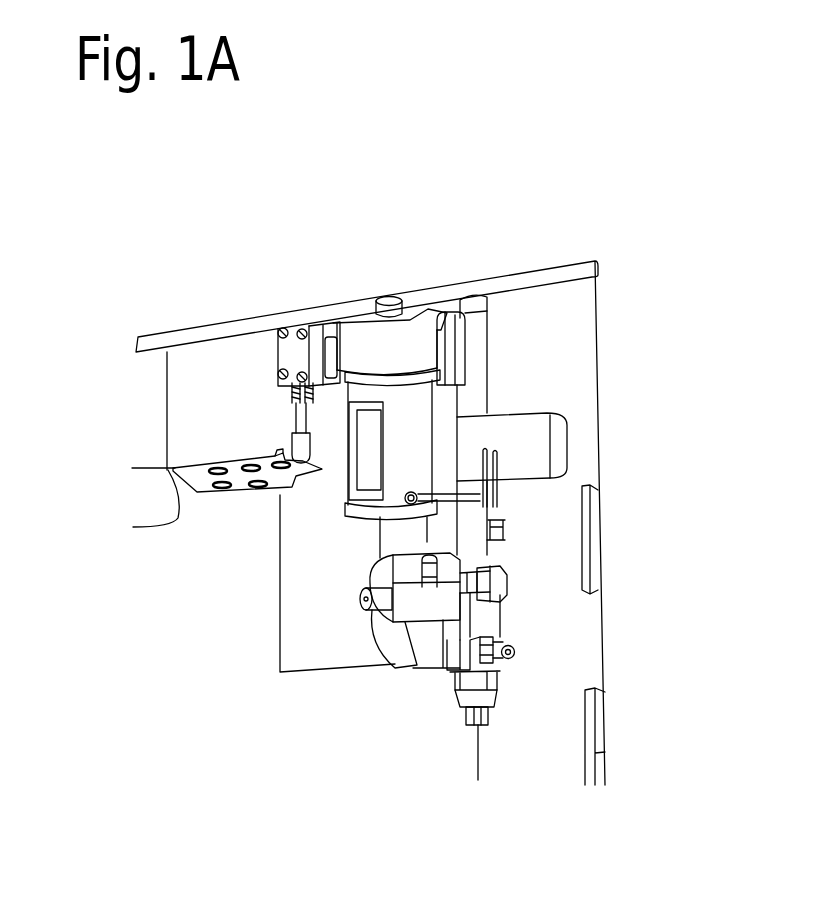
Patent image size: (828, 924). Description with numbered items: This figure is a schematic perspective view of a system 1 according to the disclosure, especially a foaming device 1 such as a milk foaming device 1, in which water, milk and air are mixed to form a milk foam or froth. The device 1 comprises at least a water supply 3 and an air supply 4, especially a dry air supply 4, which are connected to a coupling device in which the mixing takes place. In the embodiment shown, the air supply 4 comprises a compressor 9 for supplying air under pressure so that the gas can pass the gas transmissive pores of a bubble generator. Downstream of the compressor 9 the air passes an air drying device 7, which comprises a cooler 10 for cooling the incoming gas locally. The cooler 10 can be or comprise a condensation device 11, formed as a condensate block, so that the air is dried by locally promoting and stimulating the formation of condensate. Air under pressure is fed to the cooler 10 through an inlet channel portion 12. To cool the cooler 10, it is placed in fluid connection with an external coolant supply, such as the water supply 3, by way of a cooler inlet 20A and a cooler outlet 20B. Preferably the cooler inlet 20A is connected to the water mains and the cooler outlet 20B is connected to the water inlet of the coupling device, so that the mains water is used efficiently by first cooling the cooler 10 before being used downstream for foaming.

The foaming device 1 is at (333, 290).
The air supply 4 is at (480, 354).
The compressor 9 is at (413, 420).
The air drying device 7 is at (470, 554).
The inlet channel portion 12 is at (462, 566).
The cooler outlet 20B is at (366, 600).
The cooler inlet 20A is at (508, 583).
The water supply 3 is at (516, 648).
The condensation device 11 is at (413, 610).
The cooler 10 is at (432, 612).